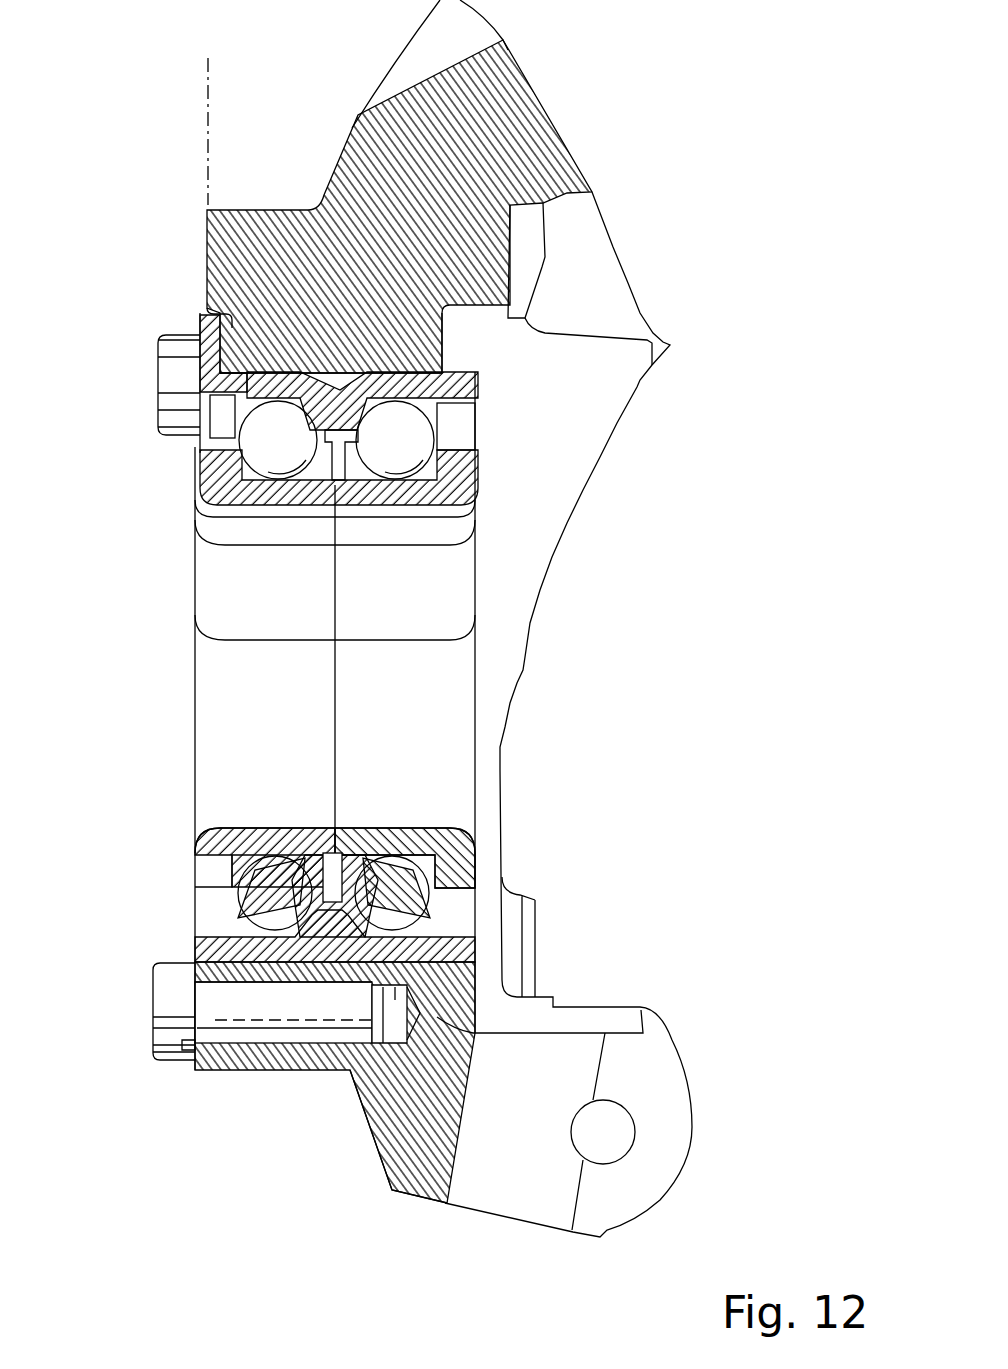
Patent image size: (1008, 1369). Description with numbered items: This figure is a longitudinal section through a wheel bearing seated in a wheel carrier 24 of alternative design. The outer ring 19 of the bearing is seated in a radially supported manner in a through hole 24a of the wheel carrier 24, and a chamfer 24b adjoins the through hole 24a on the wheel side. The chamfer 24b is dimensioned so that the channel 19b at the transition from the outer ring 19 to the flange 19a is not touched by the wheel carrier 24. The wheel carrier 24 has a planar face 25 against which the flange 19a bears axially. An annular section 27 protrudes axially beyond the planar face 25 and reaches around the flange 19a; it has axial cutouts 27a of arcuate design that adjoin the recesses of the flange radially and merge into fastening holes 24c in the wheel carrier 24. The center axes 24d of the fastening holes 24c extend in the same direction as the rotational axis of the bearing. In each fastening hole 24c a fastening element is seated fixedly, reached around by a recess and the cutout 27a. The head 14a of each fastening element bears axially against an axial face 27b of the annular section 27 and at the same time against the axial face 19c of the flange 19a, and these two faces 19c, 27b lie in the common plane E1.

The common plane E1 is at (205, 125).
The wheel carrier 24 is at (507, 128).
The through hole 24a is at (343, 378).
The chamfer 24b is at (205, 322).
The fastening holes 24c is at (318, 1066).
The center axes 24d is at (278, 1015).
The planar face 25 is at (218, 310).
The outer ring 19 is at (310, 395).
The flange 19a is at (205, 337).
The channel 19b is at (198, 362).
The axial face 19c is at (197, 352).
The annular section 27 is at (239, 672).
The axial cutouts 27a is at (217, 1020).
The axial face 27b is at (200, 413).
The head 14a is at (168, 1000).